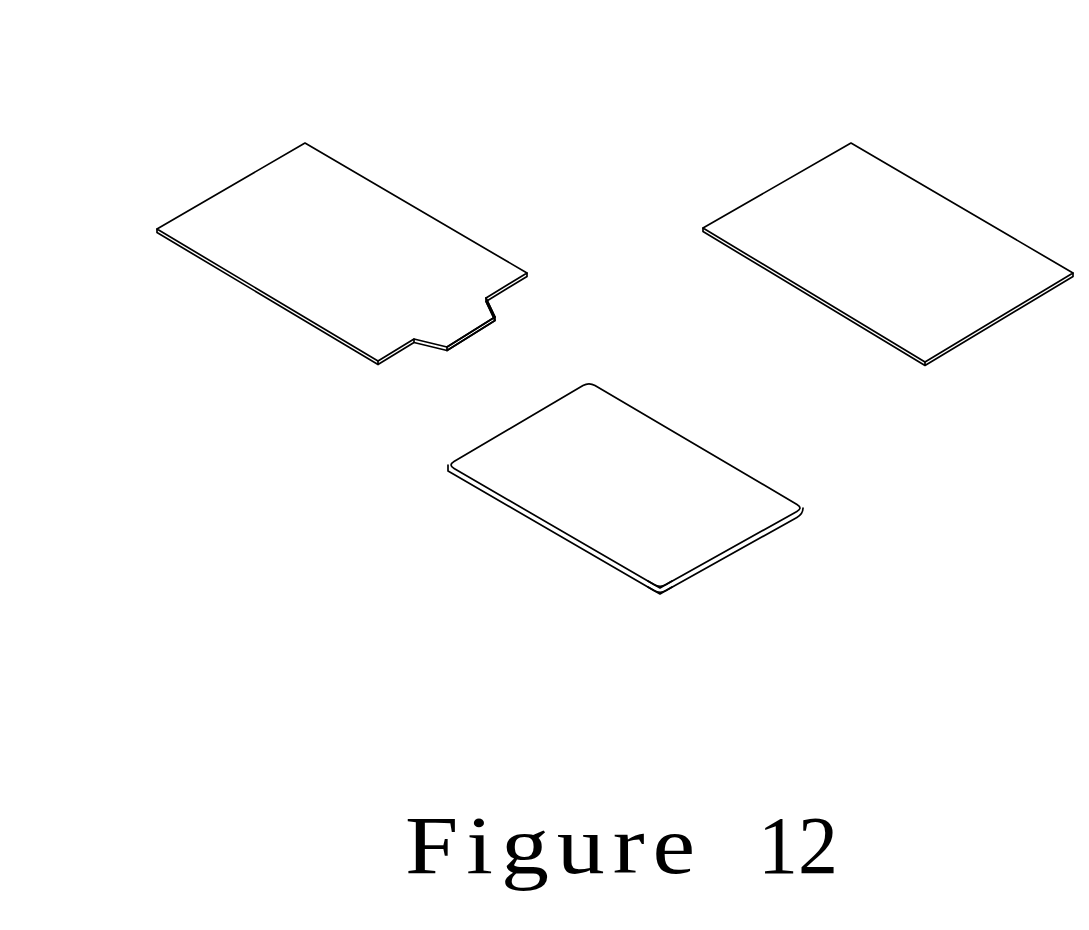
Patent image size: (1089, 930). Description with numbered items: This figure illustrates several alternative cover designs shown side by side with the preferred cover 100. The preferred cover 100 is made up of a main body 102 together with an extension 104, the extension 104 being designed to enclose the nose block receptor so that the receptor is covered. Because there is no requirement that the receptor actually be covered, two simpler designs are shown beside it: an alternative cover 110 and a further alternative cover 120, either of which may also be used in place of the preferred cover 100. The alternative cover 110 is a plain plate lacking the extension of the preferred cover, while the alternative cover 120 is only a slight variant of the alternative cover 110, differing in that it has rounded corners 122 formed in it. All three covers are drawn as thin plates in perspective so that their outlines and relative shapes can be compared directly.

The cover 100 is at (364, 200).
The main body 102 is at (388, 248).
The extension 104 is at (478, 316).
The alternative cover 110 is at (766, 137).
The alternative cover 120 is at (610, 553).
The rounded corners 122 is at (662, 592).